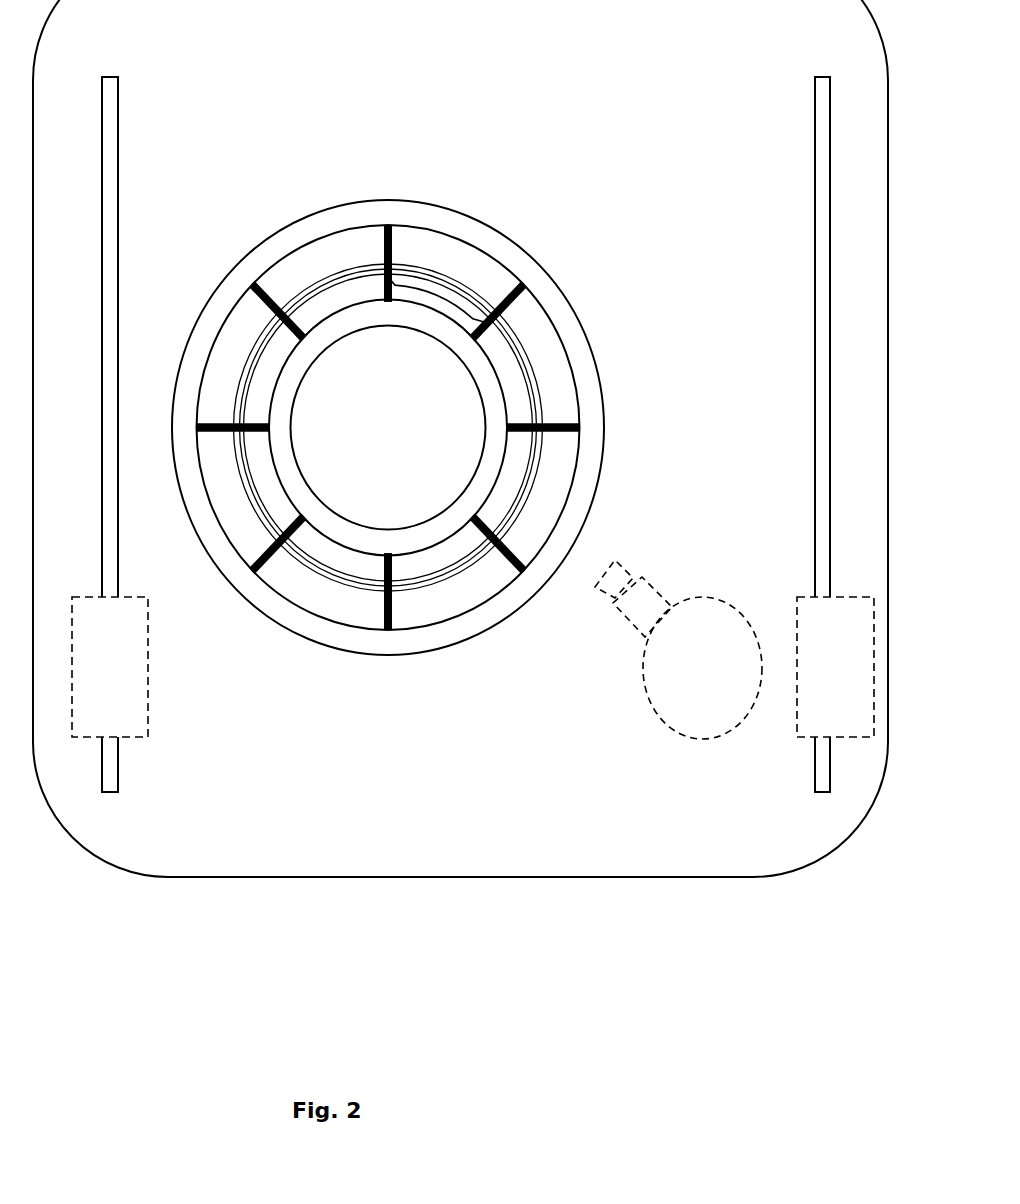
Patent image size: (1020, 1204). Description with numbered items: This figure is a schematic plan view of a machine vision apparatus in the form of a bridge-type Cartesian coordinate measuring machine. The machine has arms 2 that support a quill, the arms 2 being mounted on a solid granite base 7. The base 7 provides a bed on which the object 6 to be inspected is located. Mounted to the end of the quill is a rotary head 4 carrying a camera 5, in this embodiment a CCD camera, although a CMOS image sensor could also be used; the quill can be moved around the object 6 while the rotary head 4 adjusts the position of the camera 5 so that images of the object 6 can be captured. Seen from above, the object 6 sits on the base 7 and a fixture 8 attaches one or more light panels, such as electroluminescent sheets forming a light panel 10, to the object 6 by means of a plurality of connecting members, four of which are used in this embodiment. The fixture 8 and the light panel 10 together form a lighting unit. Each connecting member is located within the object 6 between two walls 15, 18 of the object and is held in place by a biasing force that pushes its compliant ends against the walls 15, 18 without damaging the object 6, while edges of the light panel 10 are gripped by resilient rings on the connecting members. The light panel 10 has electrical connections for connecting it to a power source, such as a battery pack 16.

The arms 2 is at (848, 740).
The rotary head 4 is at (703, 742).
The camera 5 is at (608, 612).
The object 6 is at (522, 252).
The base 7 is at (270, 877).
The fixture 8 is at (225, 350).
The light panel 10 is at (543, 464).
The wall 15 is at (439, 381).
The battery pack 16 is at (447, 293).
The wall 18 is at (342, 307).